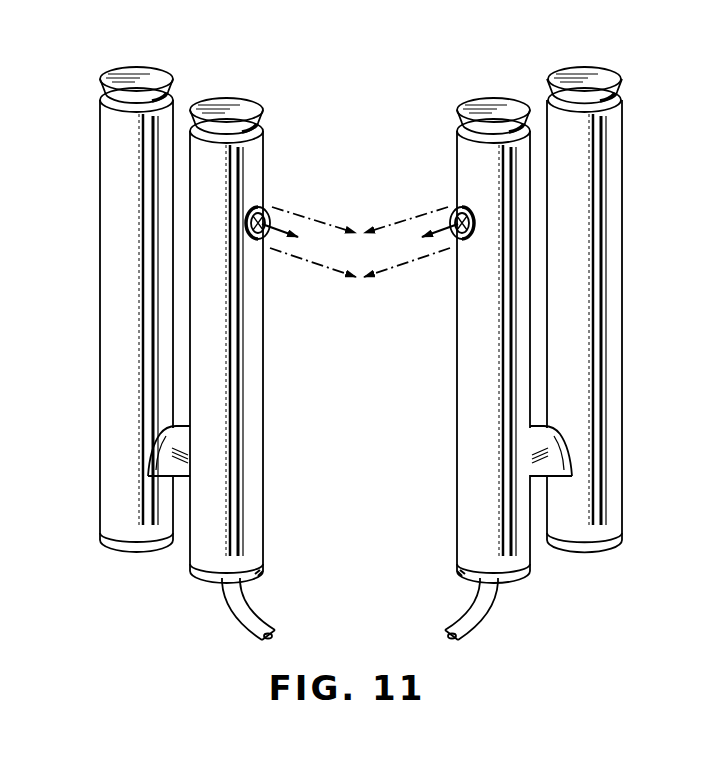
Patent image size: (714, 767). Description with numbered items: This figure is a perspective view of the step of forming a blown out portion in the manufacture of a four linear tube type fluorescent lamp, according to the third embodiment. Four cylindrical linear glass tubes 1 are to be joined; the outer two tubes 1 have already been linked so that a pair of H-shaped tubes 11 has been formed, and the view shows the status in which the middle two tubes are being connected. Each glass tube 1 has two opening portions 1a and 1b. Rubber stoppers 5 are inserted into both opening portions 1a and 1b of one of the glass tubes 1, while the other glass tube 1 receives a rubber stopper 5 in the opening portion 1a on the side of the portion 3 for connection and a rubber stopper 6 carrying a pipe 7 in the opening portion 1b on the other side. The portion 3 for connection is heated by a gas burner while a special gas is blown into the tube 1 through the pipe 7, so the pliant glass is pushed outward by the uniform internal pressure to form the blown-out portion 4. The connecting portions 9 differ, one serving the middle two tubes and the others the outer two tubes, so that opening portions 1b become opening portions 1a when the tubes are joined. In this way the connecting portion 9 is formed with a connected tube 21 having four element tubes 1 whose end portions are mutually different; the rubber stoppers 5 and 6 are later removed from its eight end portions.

The linear glass tube 1 is at (100, 344).
The opening portion 1a is at (103, 534).
The opening portion 1b is at (101, 97).
The portion for connection 3 is at (266, 242).
The blown-out portion 4 is at (264, 208).
The rubber stopper 5 is at (137, 70).
The rubber stopper 6 is at (203, 578).
The pipe 7 is at (262, 621).
The connecting portion 9 is at (178, 540).
The H-shaped tube 11 is at (88, 222).
The connected tube 21 is at (363, 395).